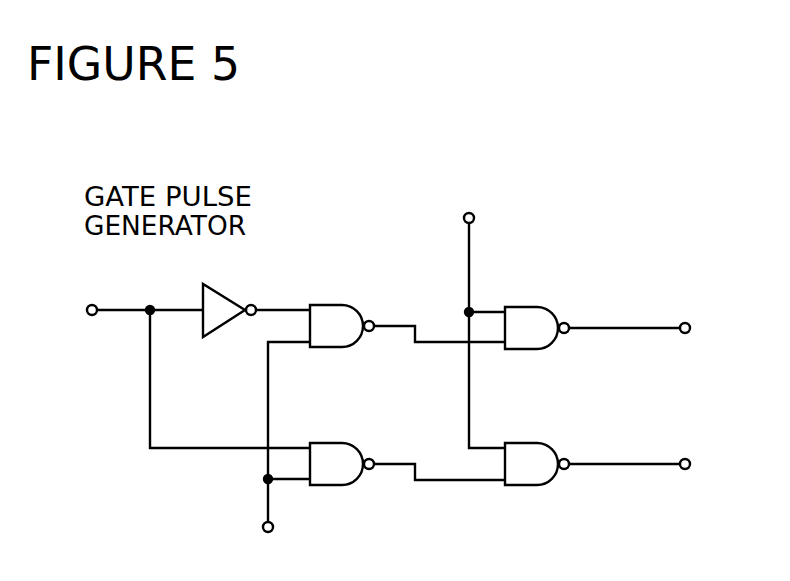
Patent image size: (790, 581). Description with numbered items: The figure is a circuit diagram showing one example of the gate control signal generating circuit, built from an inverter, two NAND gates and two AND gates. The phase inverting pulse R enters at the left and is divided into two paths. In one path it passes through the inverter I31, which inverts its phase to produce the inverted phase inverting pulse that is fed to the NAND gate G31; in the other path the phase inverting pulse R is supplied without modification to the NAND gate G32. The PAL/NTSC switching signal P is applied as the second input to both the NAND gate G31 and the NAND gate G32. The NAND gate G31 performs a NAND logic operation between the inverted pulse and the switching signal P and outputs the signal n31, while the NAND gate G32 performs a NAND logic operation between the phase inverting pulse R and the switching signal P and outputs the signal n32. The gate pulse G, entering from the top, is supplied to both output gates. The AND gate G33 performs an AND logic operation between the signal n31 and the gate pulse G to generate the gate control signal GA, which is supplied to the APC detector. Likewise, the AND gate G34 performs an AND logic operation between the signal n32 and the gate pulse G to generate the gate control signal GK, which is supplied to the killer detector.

The phase inverting pulse R is at (197, 361).
The PAL/NTSC switching signal P is at (284, 455).
The gate pulse G is at (482, 314).
The inverter I31 is at (256, 298).
The NAND gate G31 is at (342, 310).
The NAND gate G32 is at (342, 448).
The AND gate G33 is at (537, 312).
The AND gate G34 is at (537, 448).
The signal n31 is at (439, 318).
The signal n32 is at (439, 456).
The gate control signal GA is at (654, 328).
The gate control signal GK is at (655, 467).